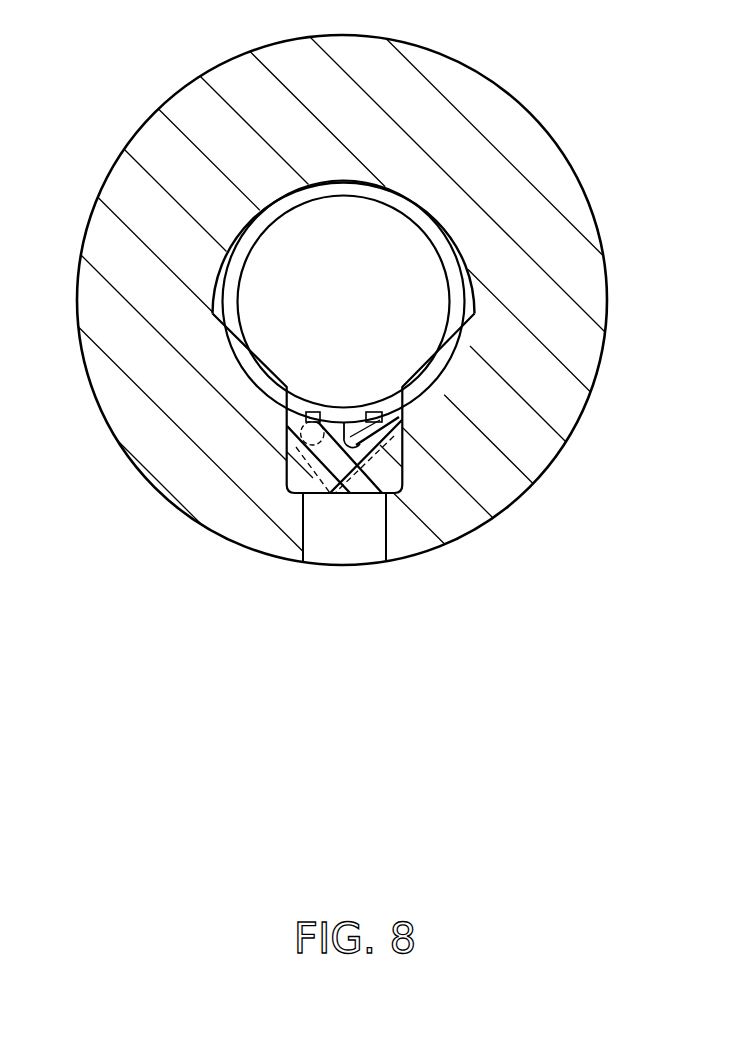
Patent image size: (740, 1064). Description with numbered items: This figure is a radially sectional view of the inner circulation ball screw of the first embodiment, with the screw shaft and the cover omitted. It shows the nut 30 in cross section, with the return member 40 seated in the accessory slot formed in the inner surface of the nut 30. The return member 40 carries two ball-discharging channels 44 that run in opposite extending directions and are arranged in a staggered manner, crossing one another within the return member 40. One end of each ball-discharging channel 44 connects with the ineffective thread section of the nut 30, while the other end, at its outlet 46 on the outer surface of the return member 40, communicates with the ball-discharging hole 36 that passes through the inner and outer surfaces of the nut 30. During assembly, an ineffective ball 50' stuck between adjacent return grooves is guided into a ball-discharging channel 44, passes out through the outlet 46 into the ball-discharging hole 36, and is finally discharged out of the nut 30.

The nut 30 is at (513, 137).
The ball-discharging hole 36 is at (326, 538).
The return member 40 is at (428, 482).
The ball-discharging channels 44 is at (321, 450).
The outlet 46 is at (362, 495).
The ineffective ball 50' is at (171, 404).